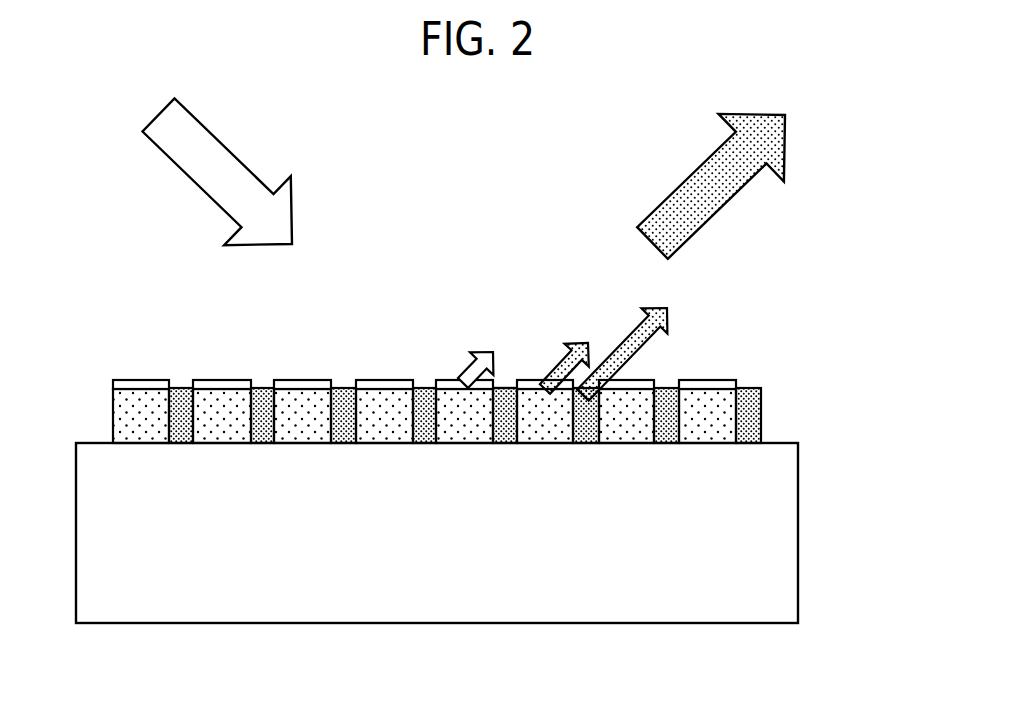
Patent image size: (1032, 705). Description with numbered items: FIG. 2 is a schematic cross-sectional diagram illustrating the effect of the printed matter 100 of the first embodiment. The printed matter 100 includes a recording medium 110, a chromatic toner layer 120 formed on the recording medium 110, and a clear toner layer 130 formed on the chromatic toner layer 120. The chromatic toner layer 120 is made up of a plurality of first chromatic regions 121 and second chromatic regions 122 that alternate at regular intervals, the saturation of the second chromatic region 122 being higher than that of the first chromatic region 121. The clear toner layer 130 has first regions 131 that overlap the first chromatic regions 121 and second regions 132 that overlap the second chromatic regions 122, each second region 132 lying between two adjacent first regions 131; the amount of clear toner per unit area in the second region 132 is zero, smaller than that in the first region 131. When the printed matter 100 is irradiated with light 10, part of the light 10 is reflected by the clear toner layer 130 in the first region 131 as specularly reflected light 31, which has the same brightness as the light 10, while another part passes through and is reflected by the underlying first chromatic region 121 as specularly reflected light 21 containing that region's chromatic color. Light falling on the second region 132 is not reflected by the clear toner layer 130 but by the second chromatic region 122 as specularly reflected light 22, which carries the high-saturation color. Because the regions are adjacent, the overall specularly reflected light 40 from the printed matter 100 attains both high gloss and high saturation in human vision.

The light 10 is at (187, 180).
The specularly reflected light 21 is at (570, 343).
The specularly reflected light 22 is at (624, 337).
The specularly reflected light 31 is at (482, 355).
The specularly reflected light 40 is at (717, 212).
The printed matter 100 is at (476, 489).
The recording medium 110 is at (788, 520).
The chromatic toner layer 120 is at (515, 542).
The first chromatic region 121 is at (550, 422).
The second chromatic region 122 is at (588, 422).
The clear toner layer 130 is at (786, 378).
The first region 131 is at (448, 382).
The second region 132 is at (505, 383).